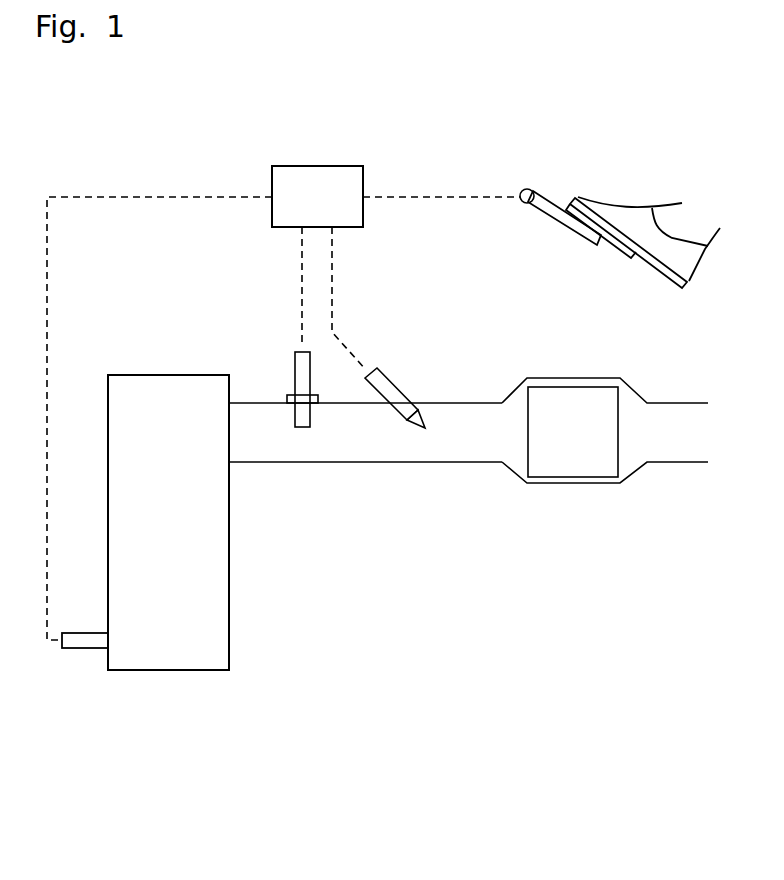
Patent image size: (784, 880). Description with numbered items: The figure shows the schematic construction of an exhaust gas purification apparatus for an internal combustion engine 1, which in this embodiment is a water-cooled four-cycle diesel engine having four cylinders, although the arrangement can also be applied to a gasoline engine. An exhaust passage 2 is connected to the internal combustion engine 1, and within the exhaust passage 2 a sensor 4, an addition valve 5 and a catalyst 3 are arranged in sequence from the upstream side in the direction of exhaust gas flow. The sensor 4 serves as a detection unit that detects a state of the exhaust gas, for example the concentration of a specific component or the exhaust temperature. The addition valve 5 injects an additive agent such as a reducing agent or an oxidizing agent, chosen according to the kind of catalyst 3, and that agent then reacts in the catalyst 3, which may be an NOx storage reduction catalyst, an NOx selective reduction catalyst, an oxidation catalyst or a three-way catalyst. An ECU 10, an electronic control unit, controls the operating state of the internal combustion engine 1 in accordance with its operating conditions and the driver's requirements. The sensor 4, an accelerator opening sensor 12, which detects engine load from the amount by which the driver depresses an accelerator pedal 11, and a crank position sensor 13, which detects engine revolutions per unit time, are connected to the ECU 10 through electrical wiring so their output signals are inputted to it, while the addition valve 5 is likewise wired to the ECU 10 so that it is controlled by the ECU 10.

The internal combustion engine 1 is at (173, 670).
The exhaust passage 2 is at (341, 463).
The catalyst 3 is at (573, 468).
The sensor 4 is at (296, 380).
The addition valve 5 is at (396, 383).
The ECU 10 is at (363, 212).
The accelerator pedal 11 is at (627, 255).
The accelerator opening sensor 12 is at (530, 190).
The crank position sensor 13 is at (92, 648).